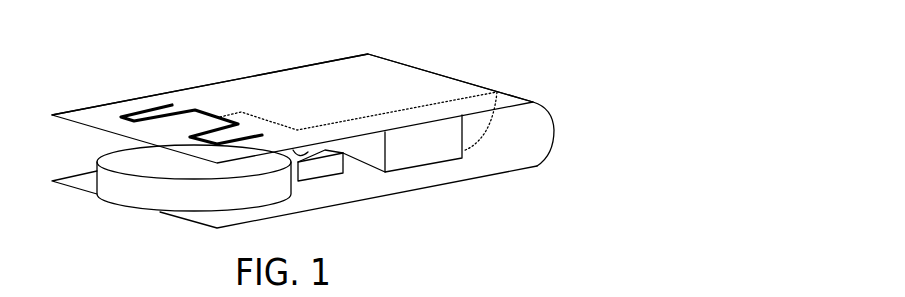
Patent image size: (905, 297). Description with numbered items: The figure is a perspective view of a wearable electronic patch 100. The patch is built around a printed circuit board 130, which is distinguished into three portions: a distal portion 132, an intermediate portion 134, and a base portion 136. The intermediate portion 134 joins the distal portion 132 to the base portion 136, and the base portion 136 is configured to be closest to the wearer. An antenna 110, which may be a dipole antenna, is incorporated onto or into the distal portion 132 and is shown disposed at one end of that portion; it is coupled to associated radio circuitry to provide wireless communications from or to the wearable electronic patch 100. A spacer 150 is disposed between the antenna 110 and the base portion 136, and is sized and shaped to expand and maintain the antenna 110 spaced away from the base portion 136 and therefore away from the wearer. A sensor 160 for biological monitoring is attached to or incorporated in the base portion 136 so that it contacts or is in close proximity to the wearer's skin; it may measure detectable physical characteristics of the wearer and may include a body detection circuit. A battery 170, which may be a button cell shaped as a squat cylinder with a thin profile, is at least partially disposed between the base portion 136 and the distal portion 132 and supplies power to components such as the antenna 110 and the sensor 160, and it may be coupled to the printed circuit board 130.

The wearable electronic patch 100 is at (567, 43).
The antenna 110 is at (158, 105).
The printed circuit board 130 is at (380, 80).
The distal portion 132 is at (288, 69).
The intermediate portion 134 is at (555, 128).
The base portion 136 is at (304, 214).
The spacer 150 is at (430, 167).
The sensor 160 is at (333, 177).
The battery 170 is at (117, 206).